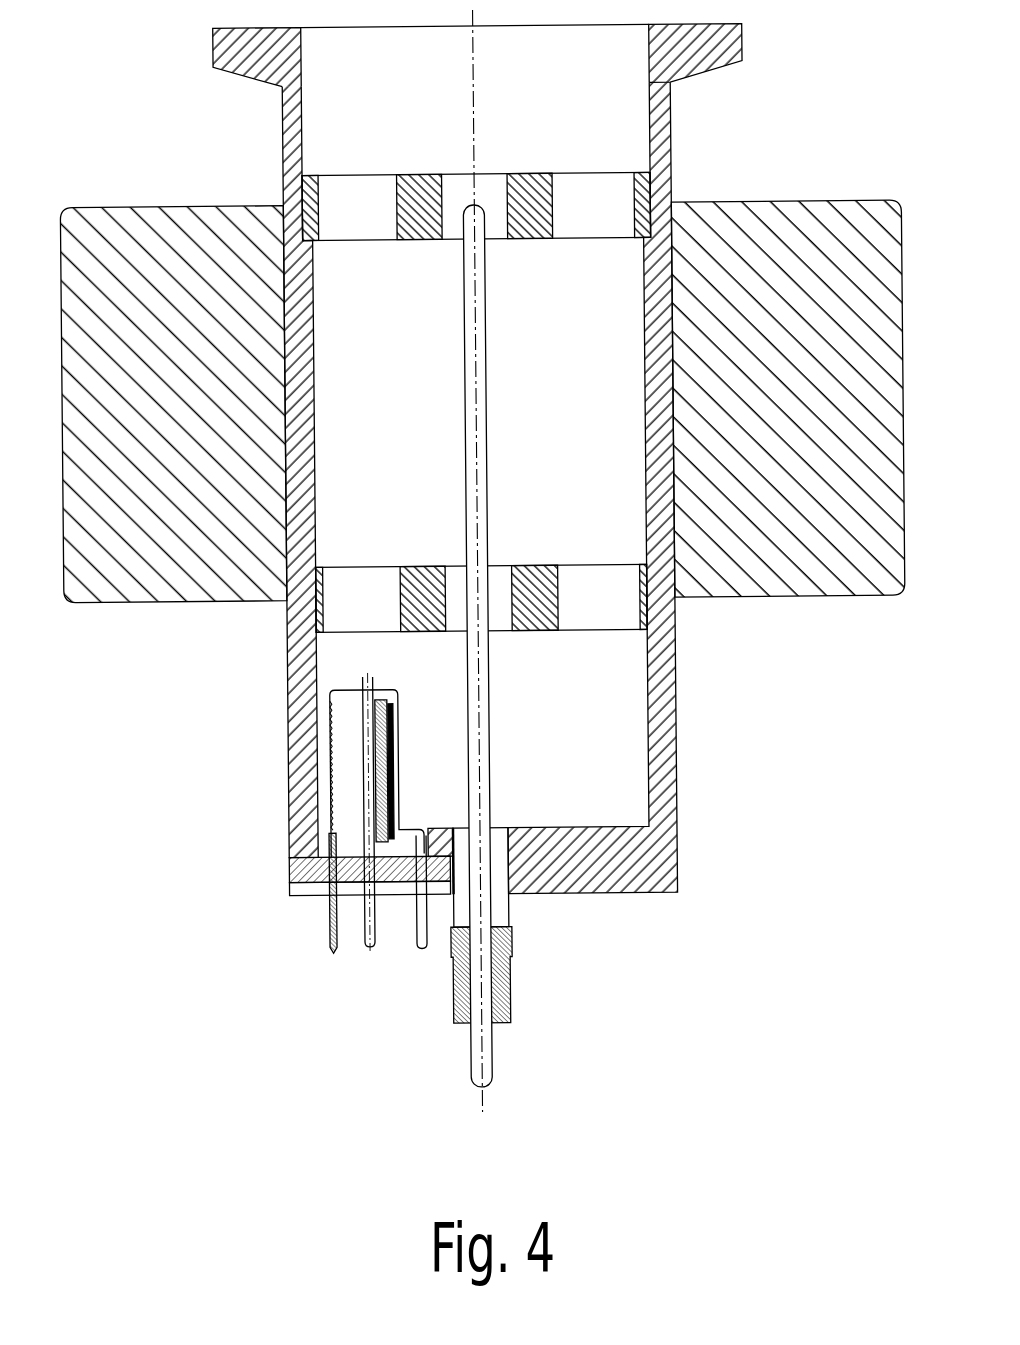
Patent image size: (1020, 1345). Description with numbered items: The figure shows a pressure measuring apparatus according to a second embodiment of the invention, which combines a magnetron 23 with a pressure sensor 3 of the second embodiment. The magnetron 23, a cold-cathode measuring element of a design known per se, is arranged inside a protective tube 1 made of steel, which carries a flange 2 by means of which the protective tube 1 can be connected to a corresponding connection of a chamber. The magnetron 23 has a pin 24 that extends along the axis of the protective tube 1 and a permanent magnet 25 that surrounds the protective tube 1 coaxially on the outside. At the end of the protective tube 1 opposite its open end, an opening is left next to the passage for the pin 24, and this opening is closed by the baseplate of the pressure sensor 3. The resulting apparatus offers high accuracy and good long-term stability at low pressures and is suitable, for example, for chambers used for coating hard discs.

The protective tube 1 is at (576, 553).
The flange 2 is at (535, 56).
The pressure sensor 3 is at (342, 783).
The magnetron 23 is at (677, 195).
The pin 24 is at (526, 561).
The permanent magnet 25 is at (482, 437).